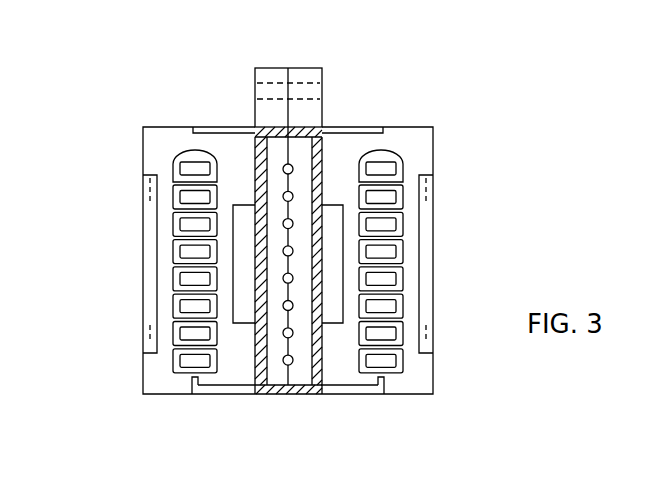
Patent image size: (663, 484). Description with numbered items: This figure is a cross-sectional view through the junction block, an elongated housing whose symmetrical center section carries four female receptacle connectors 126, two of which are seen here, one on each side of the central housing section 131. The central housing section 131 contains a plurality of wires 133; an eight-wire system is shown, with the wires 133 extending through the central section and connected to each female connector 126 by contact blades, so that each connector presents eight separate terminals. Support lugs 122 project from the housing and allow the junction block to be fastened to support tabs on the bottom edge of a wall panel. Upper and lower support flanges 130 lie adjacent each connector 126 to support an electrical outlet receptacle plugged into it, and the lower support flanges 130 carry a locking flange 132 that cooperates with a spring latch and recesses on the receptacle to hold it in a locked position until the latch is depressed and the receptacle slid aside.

The support lugs 122 is at (273, 68).
The female receptacle connectors 126 is at (156, 249).
The support flanges 130 is at (207, 129).
The central housing section 131 is at (312, 390).
The locking flange 132 is at (192, 378).
The wires 133 is at (276, 384).